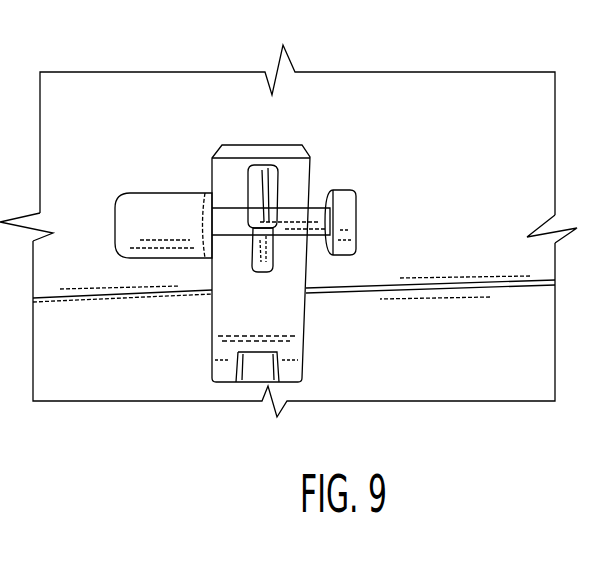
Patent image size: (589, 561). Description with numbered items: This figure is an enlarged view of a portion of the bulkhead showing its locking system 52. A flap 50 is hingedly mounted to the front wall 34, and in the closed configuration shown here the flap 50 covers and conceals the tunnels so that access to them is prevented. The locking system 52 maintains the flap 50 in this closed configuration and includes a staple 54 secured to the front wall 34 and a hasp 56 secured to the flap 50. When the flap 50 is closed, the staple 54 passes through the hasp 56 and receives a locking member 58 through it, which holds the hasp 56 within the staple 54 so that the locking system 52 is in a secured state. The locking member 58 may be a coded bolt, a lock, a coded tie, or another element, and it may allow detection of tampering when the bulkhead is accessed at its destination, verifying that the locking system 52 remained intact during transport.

The front wall 34 is at (499, 166).
The flap 50 is at (465, 358).
The locking system 52 is at (271, 194).
The staple 54 is at (298, 218).
The hasp 56 is at (283, 277).
The locking member 58 is at (278, 178).